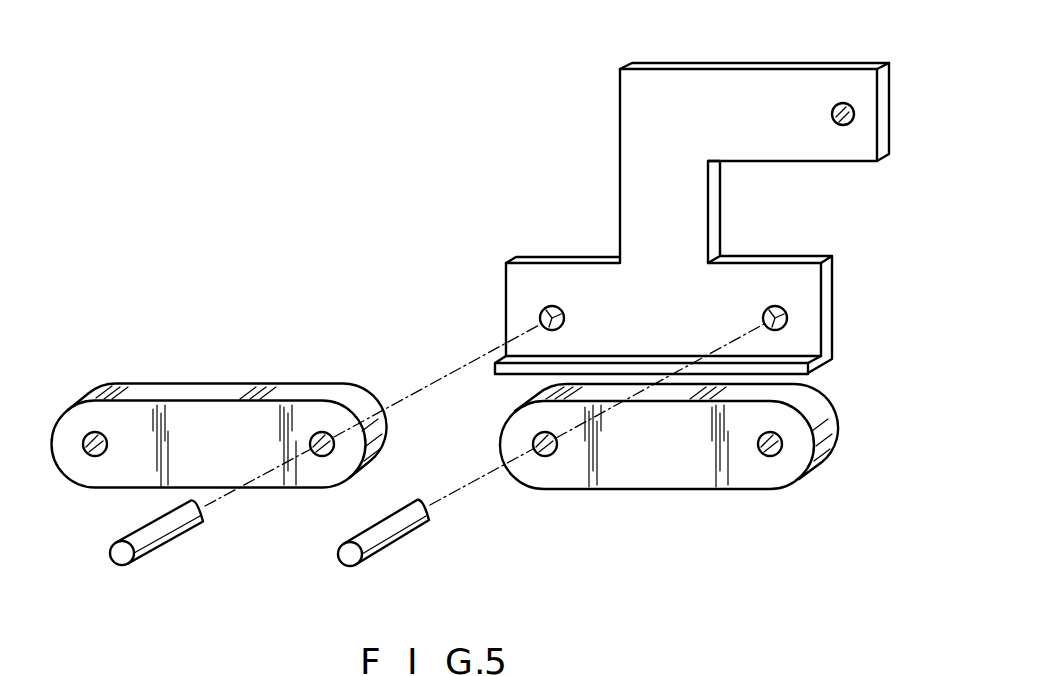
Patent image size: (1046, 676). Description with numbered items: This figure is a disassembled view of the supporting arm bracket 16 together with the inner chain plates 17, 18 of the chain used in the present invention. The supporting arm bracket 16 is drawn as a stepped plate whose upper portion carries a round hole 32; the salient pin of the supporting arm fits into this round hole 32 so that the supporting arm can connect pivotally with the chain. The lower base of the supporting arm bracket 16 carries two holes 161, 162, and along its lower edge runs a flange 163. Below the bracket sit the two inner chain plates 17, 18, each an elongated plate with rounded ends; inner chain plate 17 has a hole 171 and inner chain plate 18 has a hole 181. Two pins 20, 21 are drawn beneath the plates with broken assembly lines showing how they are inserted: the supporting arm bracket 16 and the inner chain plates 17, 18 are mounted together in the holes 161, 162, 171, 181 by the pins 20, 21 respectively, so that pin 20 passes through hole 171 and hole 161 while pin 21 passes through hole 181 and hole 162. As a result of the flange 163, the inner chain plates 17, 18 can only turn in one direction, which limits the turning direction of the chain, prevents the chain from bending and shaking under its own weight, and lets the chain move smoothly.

The supporting arm bracket 16 is at (628, 187).
The round hole 32 is at (850, 104).
The hole 161 is at (545, 311).
The hole 162 is at (787, 316).
The flange 163 is at (818, 368).
The inner chain plate 17 is at (208, 408).
The hole 171 is at (320, 430).
The inner chain plate 18 is at (680, 483).
The hole 181 is at (546, 453).
The pin 20 is at (160, 533).
The pin 21 is at (385, 535).